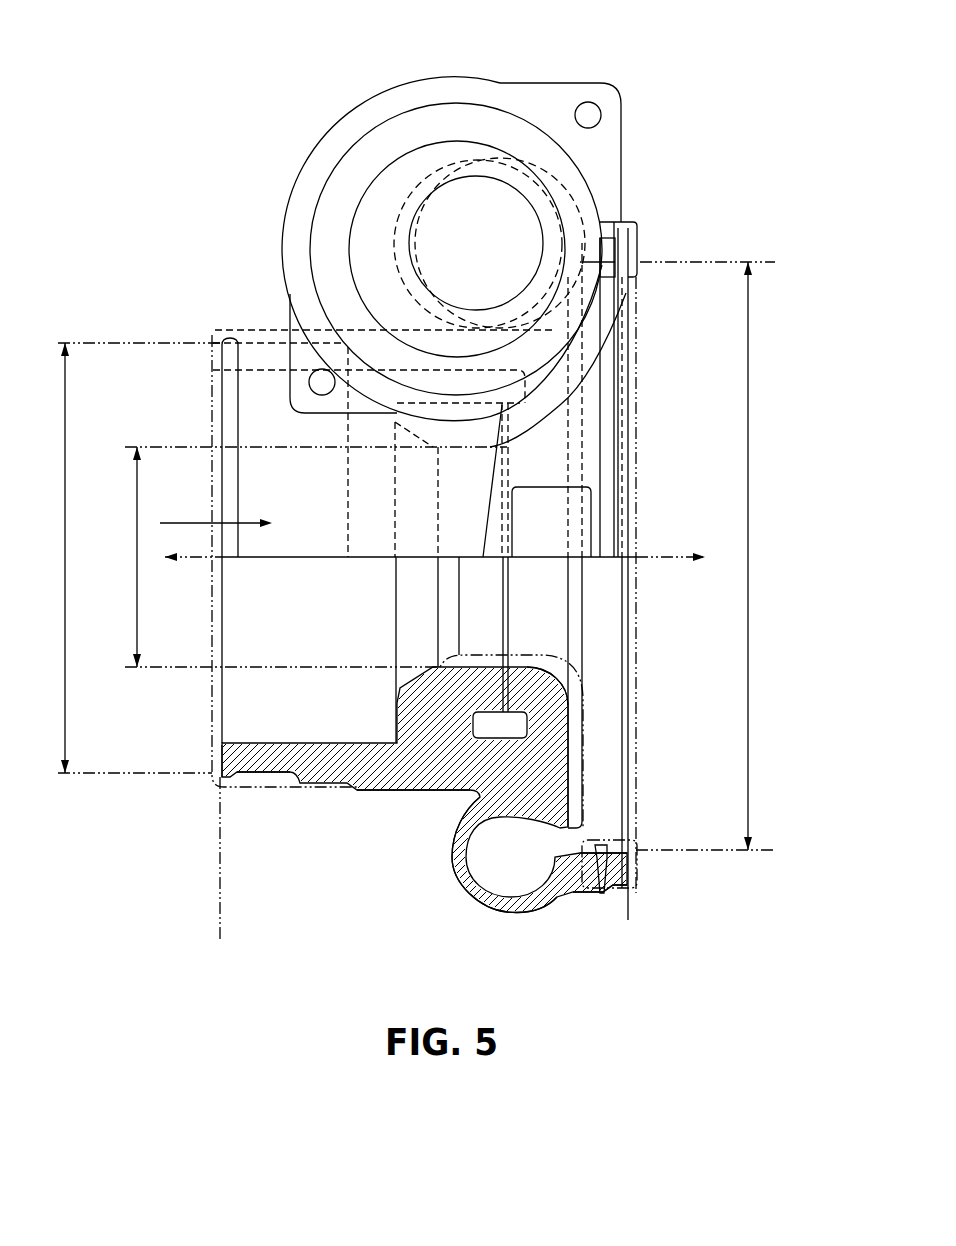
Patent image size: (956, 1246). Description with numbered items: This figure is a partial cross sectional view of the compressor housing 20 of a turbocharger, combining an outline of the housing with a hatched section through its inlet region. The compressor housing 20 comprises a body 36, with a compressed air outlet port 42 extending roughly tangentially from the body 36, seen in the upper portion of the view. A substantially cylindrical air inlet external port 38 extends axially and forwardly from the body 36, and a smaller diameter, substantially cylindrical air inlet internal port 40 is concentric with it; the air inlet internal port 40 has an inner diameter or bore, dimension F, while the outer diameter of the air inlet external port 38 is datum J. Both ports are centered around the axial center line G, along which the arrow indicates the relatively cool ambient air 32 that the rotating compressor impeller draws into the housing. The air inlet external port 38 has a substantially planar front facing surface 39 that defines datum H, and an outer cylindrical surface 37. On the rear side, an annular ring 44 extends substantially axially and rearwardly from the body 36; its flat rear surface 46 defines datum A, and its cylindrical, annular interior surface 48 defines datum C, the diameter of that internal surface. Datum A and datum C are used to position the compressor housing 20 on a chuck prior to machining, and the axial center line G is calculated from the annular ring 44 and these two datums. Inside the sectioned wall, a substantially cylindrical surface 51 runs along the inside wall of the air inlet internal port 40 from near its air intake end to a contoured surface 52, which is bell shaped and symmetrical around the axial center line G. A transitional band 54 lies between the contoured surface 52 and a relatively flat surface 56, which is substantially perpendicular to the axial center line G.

The compressor housing 20 is at (196, 89).
The compressed air outlet port 42 is at (310, 153).
The front facing surface 39 is at (215, 352).
The interior surface 48 is at (600, 272).
The air inlet internal port 40 is at (395, 697).
The substantially cylindrical surface 51 is at (475, 660).
The contoured surface 52 is at (560, 665).
The transitional band 54 is at (568, 705).
The relatively flat surface 56 is at (570, 775).
The body 36 is at (503, 913).
The outer cylindrical surface 37 is at (402, 792).
The air inlet external port 38 is at (300, 774).
The rear surface 46 is at (608, 868).
The annular ring 44 is at (600, 873).
The ambient air 32 is at (216, 512).
The datum J is at (65, 590).
The dimension F is at (137, 557).
The datum C is at (748, 427).
The axial center line G is at (667, 553).
The datum H is at (217, 843).
The datum A is at (628, 900).